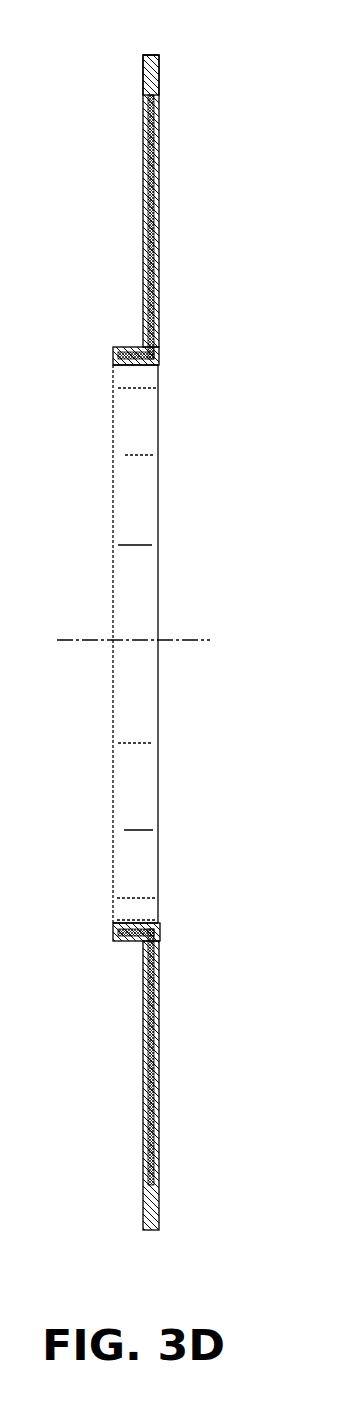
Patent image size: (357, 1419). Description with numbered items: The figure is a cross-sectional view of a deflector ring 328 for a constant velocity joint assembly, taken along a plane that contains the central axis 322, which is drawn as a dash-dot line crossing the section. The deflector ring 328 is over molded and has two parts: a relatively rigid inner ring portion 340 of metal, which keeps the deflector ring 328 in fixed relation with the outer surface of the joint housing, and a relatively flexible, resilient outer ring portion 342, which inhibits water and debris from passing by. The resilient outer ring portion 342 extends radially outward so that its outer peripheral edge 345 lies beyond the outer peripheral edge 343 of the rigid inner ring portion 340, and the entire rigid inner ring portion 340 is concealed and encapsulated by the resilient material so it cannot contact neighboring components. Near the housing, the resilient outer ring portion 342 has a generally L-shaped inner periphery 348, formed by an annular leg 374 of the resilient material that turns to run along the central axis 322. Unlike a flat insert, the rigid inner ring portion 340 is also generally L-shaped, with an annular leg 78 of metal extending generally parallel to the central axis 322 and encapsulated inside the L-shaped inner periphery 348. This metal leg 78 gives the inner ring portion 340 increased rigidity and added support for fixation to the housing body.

The deflector ring 328 is at (176, 60).
The rigid inner ring portion 340 is at (158, 204).
The resilient outer ring portion 342 is at (150, 86).
The outer peripheral edge of the rigid inner ring portion 343 is at (150, 97).
The outer peripheral edge of the resilient outer ring portion 345 is at (148, 56).
The annular leg 374 is at (128, 347).
The L-shaped inner periphery 348 is at (127, 366).
The annular leg of the inner ring portion 78 is at (138, 364).
The central axis 322 is at (180, 640).